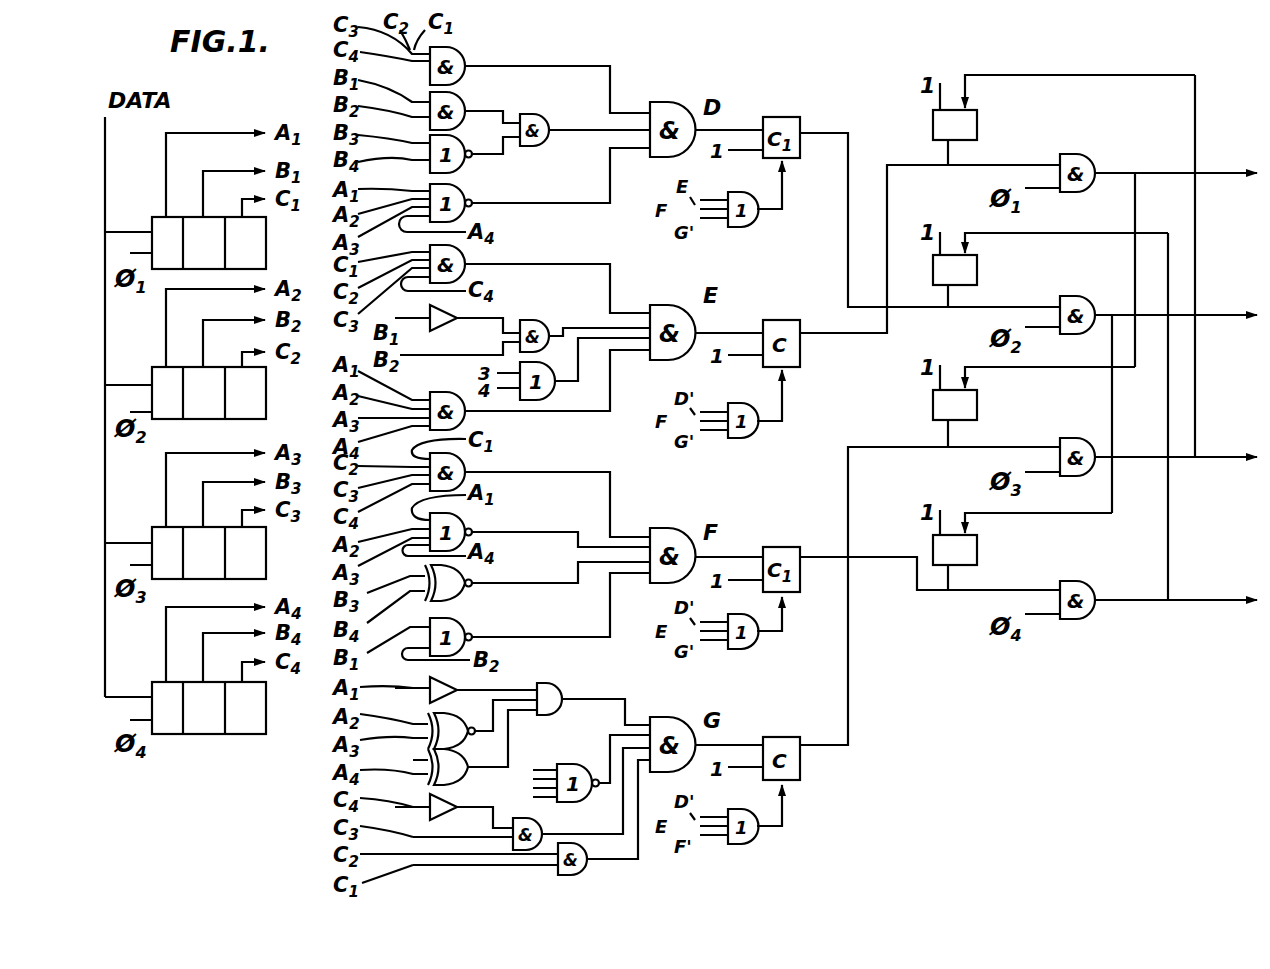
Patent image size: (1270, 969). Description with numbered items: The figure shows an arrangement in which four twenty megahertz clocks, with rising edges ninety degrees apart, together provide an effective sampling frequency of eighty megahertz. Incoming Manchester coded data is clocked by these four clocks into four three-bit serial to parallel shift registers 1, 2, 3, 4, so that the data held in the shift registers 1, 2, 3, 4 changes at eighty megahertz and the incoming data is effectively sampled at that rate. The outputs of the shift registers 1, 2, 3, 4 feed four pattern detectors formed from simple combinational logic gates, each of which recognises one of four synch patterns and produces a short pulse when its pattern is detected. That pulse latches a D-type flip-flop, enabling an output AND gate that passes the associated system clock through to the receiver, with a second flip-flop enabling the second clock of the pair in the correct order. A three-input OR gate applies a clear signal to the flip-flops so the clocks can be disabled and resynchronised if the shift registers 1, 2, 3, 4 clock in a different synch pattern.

The three-bit serial to parallel shift register 1 is at (176, 257).
The three-bit serial to parallel shift register 2 is at (176, 407).
The three-bit serial to parallel shift register 3 is at (176, 567).
The three-bit serial to parallel shift register 4 is at (176, 722).